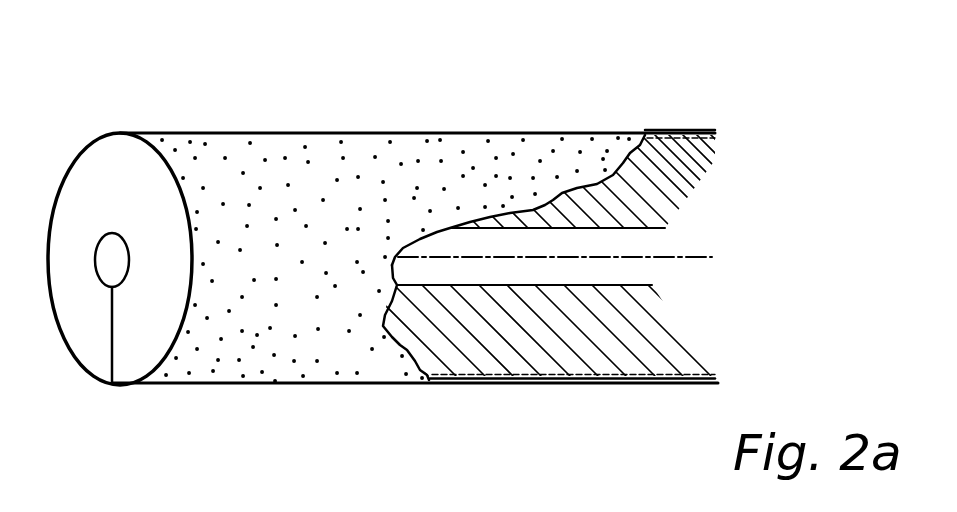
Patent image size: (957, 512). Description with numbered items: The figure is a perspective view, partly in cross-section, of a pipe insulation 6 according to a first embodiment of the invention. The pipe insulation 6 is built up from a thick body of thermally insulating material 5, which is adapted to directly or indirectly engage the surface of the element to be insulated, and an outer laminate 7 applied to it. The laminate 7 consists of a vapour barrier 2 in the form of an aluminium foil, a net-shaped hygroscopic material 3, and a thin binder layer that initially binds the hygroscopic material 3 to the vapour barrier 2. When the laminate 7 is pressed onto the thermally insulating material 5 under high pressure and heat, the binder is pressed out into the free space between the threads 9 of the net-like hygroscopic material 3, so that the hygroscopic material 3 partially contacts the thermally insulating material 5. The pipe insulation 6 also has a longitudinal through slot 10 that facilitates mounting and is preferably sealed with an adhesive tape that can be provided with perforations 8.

The vapour barrier 2 is at (695, 142).
The hygroscopic material 3 is at (710, 147).
The thermally insulating material 5 is at (645, 178).
The pipe insulation 6 is at (294, 132).
The laminate 7 is at (667, 383).
The perforations 8 is at (326, 350).
The threads 9 is at (567, 383).
The longitudinal through slot 10 is at (112, 350).